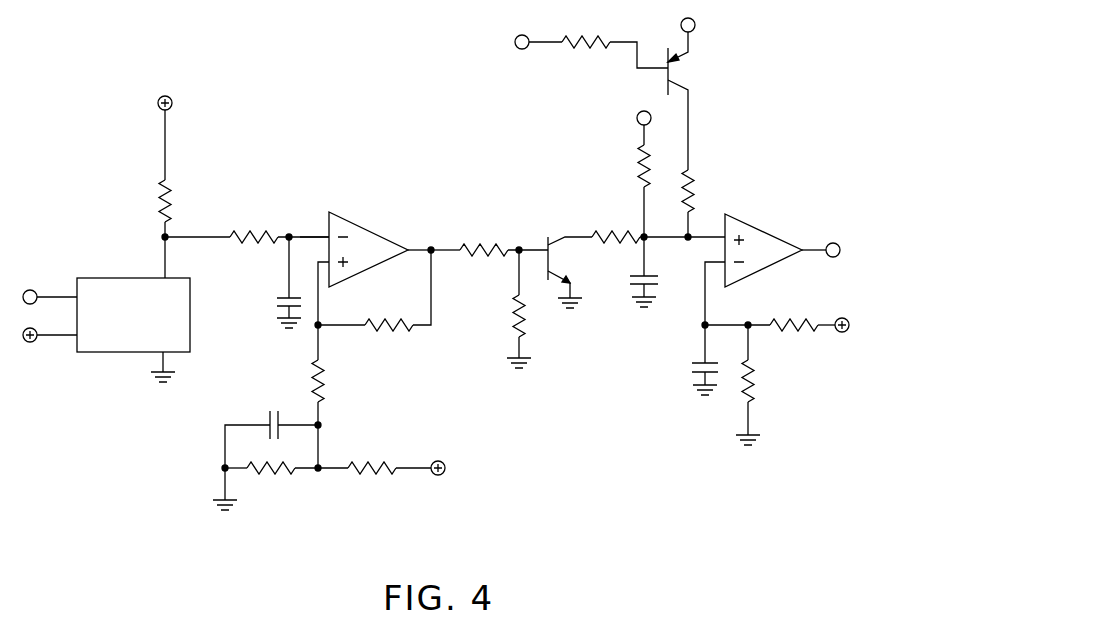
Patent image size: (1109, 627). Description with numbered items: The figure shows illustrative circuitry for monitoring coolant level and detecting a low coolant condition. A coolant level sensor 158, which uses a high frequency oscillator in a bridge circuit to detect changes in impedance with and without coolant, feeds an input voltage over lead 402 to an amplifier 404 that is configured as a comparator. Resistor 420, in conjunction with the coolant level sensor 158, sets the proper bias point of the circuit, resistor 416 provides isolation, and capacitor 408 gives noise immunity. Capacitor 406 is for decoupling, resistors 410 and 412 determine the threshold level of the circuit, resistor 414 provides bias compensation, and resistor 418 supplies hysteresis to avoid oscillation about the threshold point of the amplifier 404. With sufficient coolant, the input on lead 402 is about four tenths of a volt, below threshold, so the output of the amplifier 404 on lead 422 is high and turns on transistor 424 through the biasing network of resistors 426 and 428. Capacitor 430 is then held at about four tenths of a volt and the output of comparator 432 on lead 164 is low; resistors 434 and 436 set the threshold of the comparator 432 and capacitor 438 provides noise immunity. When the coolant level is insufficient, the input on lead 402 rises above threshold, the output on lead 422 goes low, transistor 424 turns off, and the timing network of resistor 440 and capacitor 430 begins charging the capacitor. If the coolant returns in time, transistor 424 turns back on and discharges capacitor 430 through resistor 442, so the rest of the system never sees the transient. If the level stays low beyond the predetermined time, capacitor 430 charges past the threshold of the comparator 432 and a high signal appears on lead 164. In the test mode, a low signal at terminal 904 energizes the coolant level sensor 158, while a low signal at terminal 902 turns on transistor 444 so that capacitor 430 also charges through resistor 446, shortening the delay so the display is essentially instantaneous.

The coolant level sensor 158 is at (113, 354).
The terminal 904 is at (33, 289).
The resistor 420 is at (160, 208).
The resistor 416 is at (248, 230).
The capacitor 408 is at (279, 298).
The lead 402 is at (316, 233).
The amplifier 404 is at (352, 224).
The lead 422 is at (432, 247).
The resistor 418 is at (392, 333).
The resistor 426 is at (493, 258).
The resistor 428 is at (515, 312).
The transistor 424 is at (565, 275).
The resistor 442 is at (617, 229).
The resistor 440 is at (640, 165).
The capacitor 430 is at (648, 272).
The terminal 902 is at (514, 42).
The transistor 444 is at (673, 76).
The resistor 446 is at (694, 185).
The comparator 432 is at (745, 226).
The lead 164 is at (812, 249).
The resistor 434 is at (784, 319).
The capacitor 438 is at (692, 370).
The resistor 436 is at (758, 370).
The resistor 414 is at (322, 380).
The capacitor 406 is at (290, 397).
The resistor 410 is at (272, 472).
The resistor 412 is at (350, 472).